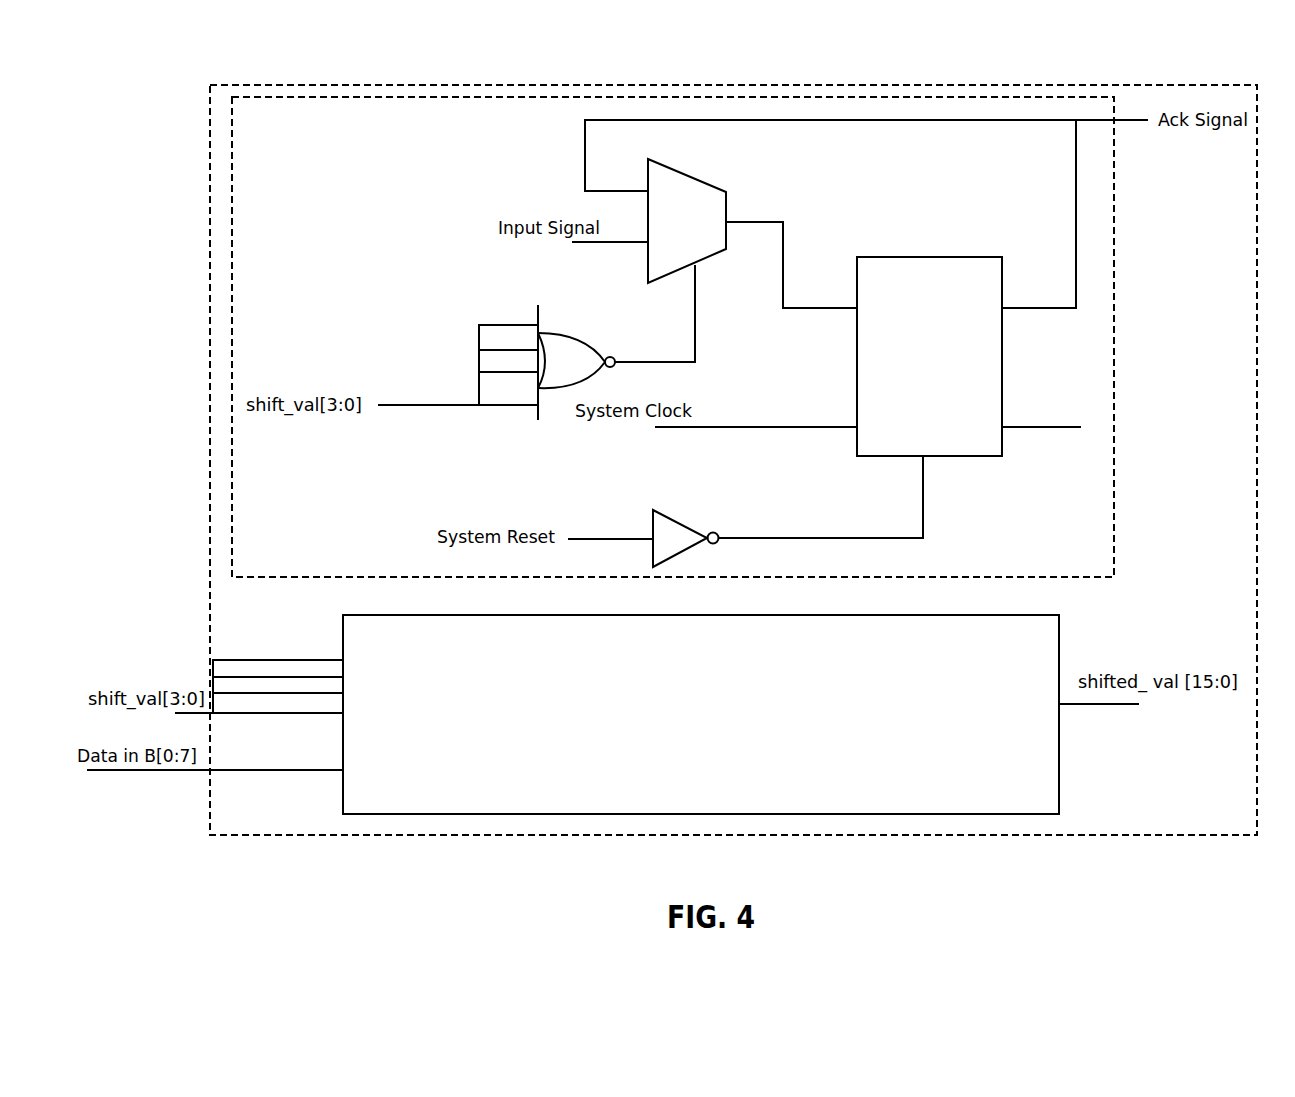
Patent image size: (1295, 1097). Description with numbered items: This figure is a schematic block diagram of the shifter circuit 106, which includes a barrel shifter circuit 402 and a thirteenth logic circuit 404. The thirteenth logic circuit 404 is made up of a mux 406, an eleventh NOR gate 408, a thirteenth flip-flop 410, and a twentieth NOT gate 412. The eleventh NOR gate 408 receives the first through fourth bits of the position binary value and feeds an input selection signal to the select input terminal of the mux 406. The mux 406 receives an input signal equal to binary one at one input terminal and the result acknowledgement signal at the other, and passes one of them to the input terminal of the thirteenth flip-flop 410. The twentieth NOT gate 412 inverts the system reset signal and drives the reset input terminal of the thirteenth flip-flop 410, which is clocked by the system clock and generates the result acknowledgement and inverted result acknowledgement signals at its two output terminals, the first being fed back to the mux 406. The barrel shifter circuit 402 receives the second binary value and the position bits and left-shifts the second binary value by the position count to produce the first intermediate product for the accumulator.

The shifter circuit 106 is at (158, 789).
The barrel shifter circuit 402 is at (809, 617).
The thirteenth logic circuit 404 is at (1114, 339).
The mux 406 is at (690, 176).
The eleventh NOR gate 408 is at (567, 335).
The thirteenth flip-flop 410 is at (926, 258).
The twentieth NOT gate 412 is at (678, 522).